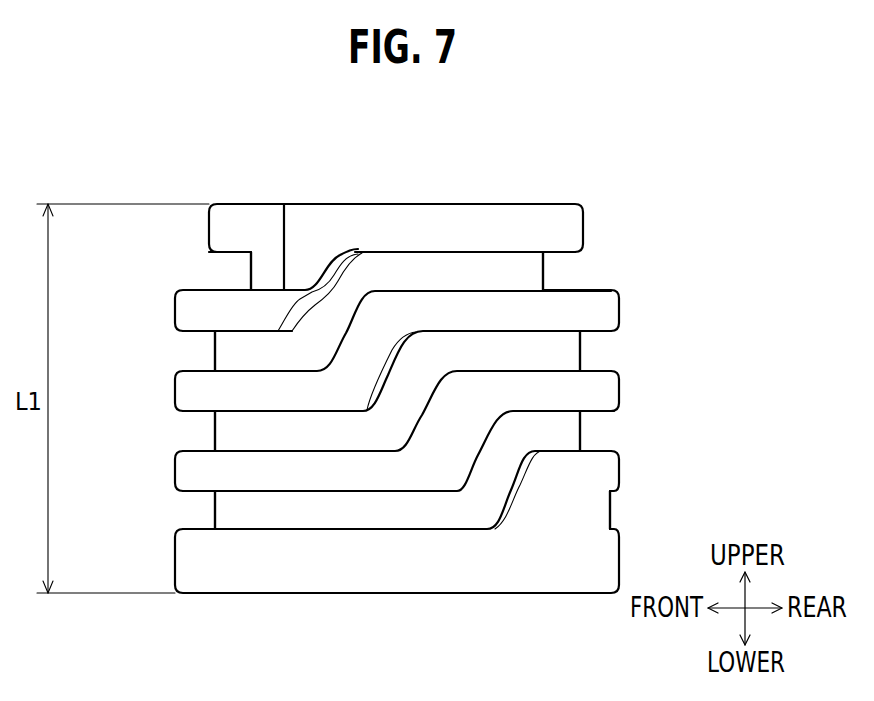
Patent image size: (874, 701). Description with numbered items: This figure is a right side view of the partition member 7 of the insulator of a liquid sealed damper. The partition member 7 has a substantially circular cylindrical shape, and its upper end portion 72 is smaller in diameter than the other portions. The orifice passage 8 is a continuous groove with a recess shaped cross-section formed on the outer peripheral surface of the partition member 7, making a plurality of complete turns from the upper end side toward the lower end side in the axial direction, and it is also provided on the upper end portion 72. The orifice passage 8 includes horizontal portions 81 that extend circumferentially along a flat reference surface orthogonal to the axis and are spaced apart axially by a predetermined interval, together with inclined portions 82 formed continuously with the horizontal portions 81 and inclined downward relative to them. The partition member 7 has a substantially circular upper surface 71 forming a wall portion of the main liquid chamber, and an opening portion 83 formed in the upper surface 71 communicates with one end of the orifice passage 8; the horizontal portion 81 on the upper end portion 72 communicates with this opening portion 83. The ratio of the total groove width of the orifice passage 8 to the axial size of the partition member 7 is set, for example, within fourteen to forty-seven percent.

The partition member 7 is at (400, 188).
The upper surface 71 is at (478, 204).
The upper end portion 72 is at (612, 260).
The orifice passage 8 is at (397, 398).
The horizontal portions 81 is at (213, 371).
The inclined portions 82 is at (330, 307).
The opening portion 83 is at (248, 231).